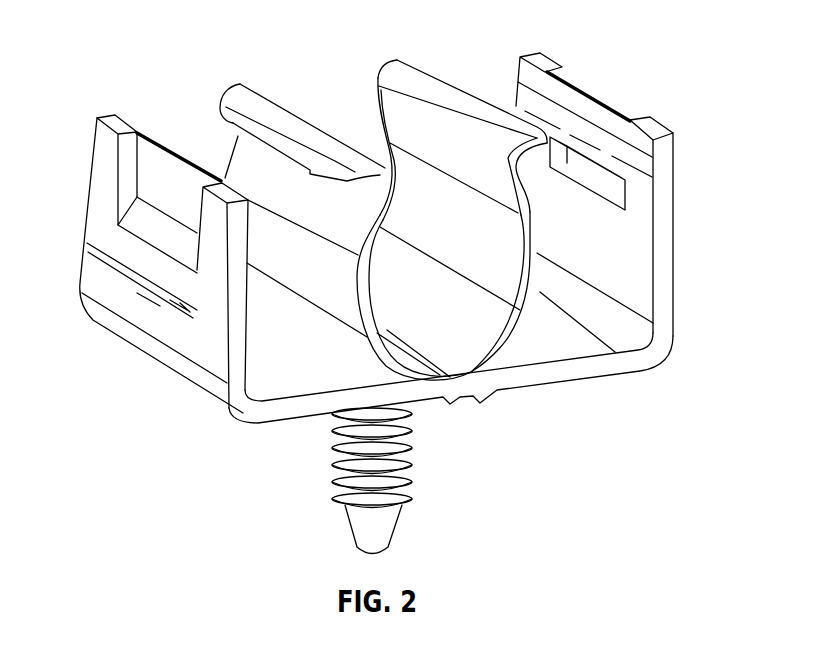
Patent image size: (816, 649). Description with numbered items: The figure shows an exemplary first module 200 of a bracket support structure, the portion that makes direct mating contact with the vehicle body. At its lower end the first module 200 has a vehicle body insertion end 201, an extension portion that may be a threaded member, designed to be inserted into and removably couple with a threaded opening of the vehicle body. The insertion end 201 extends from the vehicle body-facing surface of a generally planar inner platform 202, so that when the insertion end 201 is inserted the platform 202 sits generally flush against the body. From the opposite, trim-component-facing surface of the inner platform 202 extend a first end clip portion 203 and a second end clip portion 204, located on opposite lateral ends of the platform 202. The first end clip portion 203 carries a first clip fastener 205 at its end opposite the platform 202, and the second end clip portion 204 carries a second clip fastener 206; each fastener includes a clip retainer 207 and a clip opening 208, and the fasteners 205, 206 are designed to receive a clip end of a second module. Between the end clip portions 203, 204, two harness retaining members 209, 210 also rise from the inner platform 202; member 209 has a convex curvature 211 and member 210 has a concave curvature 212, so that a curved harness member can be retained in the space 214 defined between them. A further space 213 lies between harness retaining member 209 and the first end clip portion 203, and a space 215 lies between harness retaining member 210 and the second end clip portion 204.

The first module 200 is at (692, 31).
The vehicle body insertion end 201 is at (413, 498).
The inner platform 202 is at (580, 380).
The first end clip portion 203 is at (223, 368).
The second end clip portion 204 is at (674, 310).
The first clip fastener 205 is at (158, 130).
The second clip fastener 206 is at (585, 78).
The clip retainer 207 is at (150, 167).
The clip opening 208 is at (155, 215).
The harness retaining member 209 is at (230, 153).
The harness retaining member 210 is at (370, 90).
The convex curvature 211 is at (280, 128).
The concave curvature 212 is at (465, 97).
The space 213 is at (315, 344).
The space 214 is at (457, 309).
The space 215 is at (625, 268).